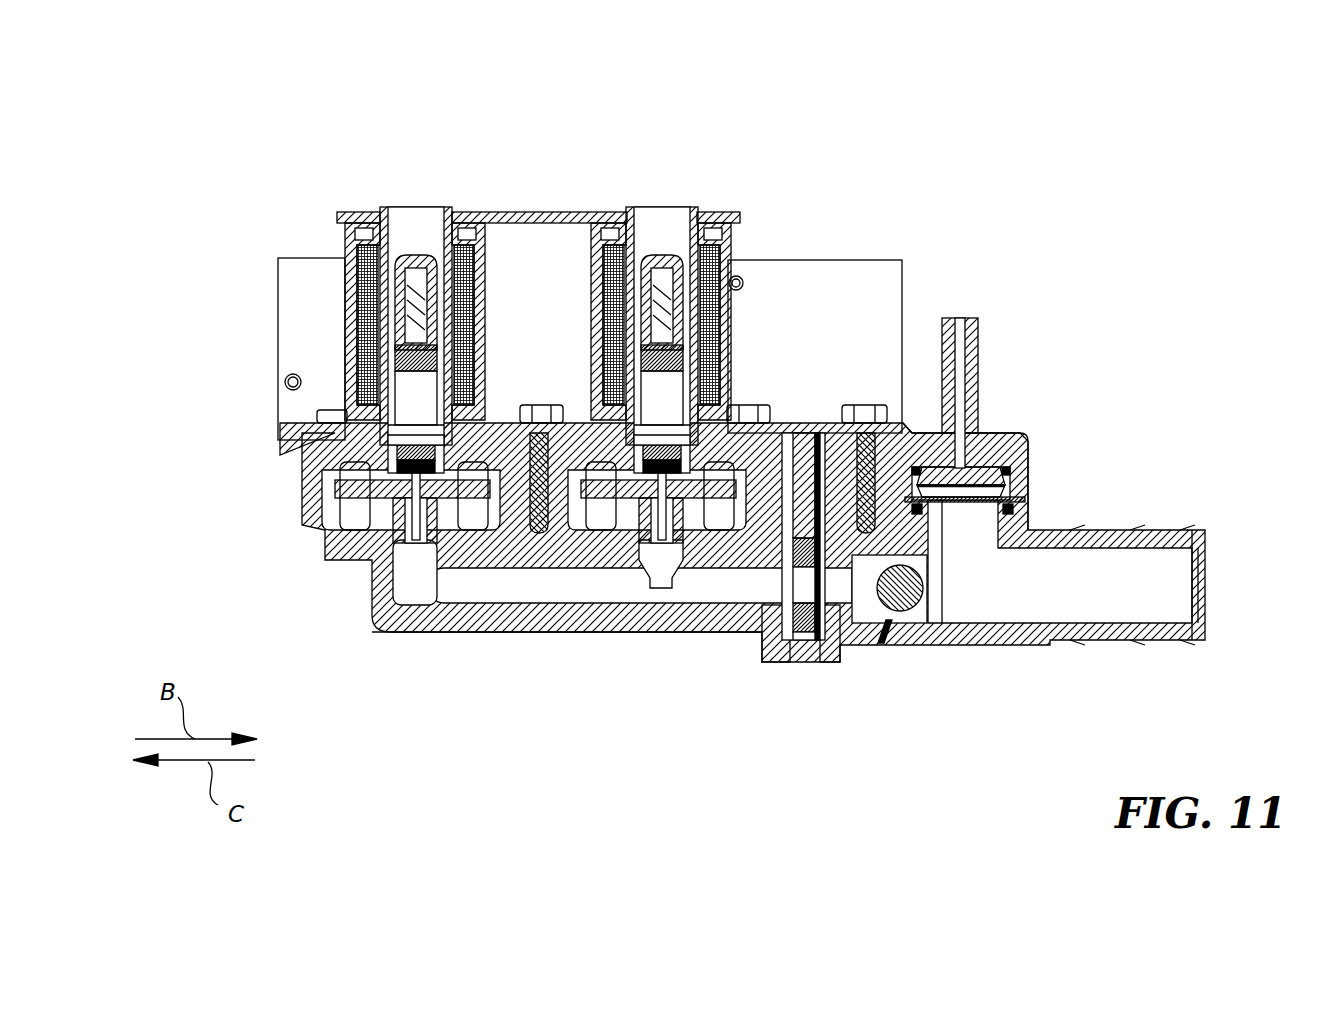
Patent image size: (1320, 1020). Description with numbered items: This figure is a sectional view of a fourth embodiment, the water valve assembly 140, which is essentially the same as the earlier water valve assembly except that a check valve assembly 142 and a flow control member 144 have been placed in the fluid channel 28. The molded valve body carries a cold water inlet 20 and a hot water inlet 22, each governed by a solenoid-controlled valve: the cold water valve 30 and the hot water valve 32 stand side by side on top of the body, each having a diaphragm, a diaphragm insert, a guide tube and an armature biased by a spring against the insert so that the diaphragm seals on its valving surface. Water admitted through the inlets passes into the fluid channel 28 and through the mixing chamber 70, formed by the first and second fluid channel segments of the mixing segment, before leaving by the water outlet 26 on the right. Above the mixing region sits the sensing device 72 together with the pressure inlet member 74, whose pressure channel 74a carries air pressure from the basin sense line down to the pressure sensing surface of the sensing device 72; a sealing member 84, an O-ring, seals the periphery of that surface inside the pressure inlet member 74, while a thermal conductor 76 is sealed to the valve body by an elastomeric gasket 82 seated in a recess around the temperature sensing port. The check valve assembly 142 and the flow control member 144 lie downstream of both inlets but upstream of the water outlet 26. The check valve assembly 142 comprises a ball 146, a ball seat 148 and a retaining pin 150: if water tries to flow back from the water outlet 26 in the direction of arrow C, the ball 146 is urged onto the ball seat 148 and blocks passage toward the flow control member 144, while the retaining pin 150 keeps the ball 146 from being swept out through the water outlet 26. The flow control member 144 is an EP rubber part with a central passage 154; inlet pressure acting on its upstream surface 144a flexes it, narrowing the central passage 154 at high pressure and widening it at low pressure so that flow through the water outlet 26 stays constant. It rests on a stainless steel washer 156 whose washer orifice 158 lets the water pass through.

The cold water inlet 20 is at (385, 572).
The hot water inlet 22 is at (668, 612).
The water outlet 26 is at (1138, 617).
The fluid channel 28 is at (582, 640).
The cold water valve 30 is at (320, 188).
The hot water valve 32 is at (583, 190).
The mixing chamber 70 is at (996, 582).
The sensing device 72 is at (985, 452).
The pressure inlet member 74 is at (977, 432).
The pressure channel 74a is at (975, 325).
The thermal conductor 76 is at (1028, 482).
The gasket 82 is at (1028, 500).
The sealing member 84 is at (1028, 452).
The water valve assembly 140 is at (1195, 188).
The check valve assembly 142 is at (882, 645).
The flow control member 144 is at (800, 648).
The upstream surface 144a is at (785, 645).
The ball 146 is at (903, 612).
The ball seat 148 is at (876, 645).
The retaining pin 150 is at (940, 595).
The central passage 154 is at (772, 640).
The washer 156 is at (822, 648).
The washer orifice 158 is at (876, 648).